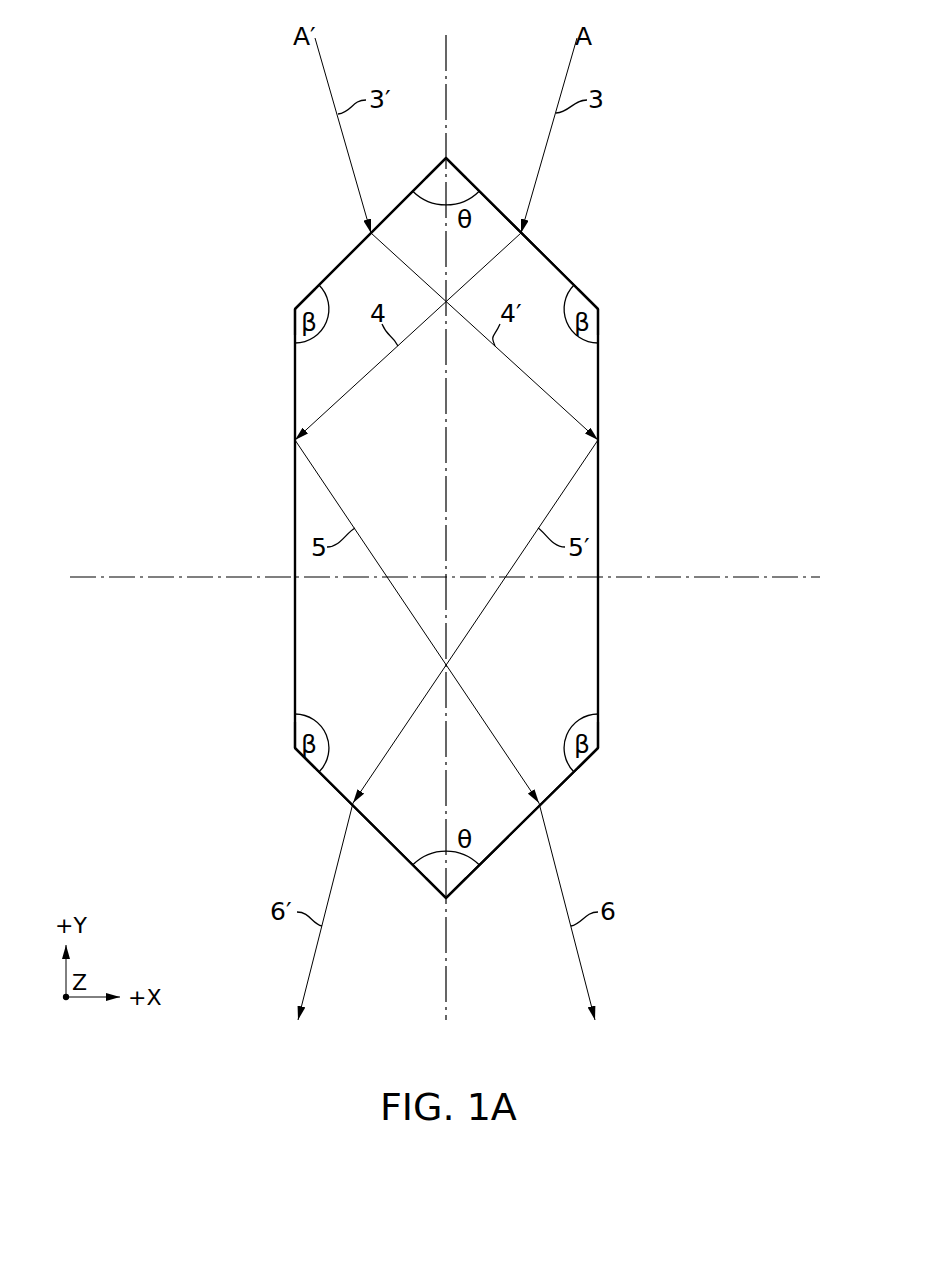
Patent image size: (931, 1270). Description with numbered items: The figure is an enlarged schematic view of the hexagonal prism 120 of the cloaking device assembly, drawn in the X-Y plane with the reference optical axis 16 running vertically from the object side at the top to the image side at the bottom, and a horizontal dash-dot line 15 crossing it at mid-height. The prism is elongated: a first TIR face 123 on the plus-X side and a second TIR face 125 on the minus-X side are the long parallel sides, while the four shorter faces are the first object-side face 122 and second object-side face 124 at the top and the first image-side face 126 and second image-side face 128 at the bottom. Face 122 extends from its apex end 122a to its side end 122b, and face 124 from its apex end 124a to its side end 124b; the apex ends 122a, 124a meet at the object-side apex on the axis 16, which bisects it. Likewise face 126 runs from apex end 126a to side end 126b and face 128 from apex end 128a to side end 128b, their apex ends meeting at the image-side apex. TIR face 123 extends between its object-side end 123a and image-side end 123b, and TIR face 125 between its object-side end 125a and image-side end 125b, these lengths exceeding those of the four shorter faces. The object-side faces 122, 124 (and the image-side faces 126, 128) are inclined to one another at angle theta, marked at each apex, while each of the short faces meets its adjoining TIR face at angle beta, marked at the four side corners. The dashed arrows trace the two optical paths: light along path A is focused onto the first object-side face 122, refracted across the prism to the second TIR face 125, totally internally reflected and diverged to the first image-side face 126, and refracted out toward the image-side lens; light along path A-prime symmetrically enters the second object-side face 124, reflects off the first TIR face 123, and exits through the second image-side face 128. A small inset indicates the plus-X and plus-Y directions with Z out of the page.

The hexagonal prism 120 is at (507, 528).
The first object-side face 122 is at (553, 265).
The second object-side face 124 is at (338, 265).
The first TIR face 123 is at (598, 477).
The second TIR face 125 is at (295, 560).
The first image-side face 126 is at (550, 795).
The second image-side face 128 is at (340, 793).
The apex end of first object-side face 122a is at (455, 165).
The apex end of second object-side face 124a is at (438, 165).
The side end of first object-side face 122b is at (588, 299).
The object-side end of first TIR face 123a is at (598, 322).
The side end of second object-side face 124b is at (305, 299).
The object-side end of second TIR face 125a is at (295, 322).
The image-side end of second TIR face 125b is at (295, 730).
The apex end of second image-side face 128a is at (305, 757).
The image-side end of first TIR face 123b is at (598, 730).
The apex end of first image-side face 126a is at (588, 757).
The side end of second image-side face 128b is at (438, 891).
The side end of first image-side face 126b is at (455, 891).
The reference optical axis 16 is at (449, 53).
The horizontal axis 15 is at (752, 577).